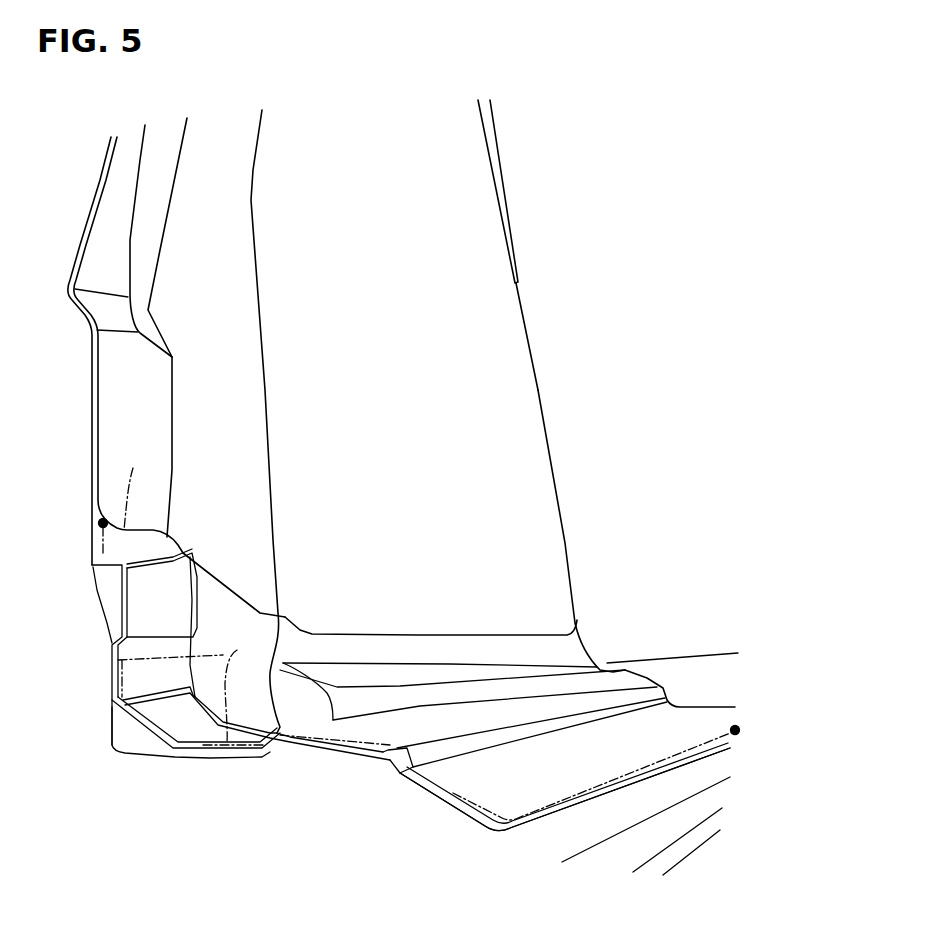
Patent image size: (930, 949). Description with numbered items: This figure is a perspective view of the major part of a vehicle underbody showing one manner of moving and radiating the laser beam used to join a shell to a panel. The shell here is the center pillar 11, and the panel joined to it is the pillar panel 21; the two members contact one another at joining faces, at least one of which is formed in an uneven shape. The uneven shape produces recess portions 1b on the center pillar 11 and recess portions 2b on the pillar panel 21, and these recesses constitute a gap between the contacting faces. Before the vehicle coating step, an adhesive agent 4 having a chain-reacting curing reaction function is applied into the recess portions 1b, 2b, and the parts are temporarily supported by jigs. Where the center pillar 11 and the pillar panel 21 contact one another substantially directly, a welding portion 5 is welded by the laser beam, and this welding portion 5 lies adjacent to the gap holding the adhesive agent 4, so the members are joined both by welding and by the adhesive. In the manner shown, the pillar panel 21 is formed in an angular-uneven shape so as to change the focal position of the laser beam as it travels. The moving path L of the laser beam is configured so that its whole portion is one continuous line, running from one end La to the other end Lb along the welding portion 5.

The center pillar 11 is at (506, 163).
The pillar panel 21 is at (527, 485).
The recess portion 1b is at (132, 752).
The recess portion 2b is at (353, 750).
The adhesive agent 4 is at (108, 598).
The welding portion 5 is at (92, 537).
The moving path L is at (570, 795).
The one end La is at (737, 726).
The other end Lb is at (100, 521).